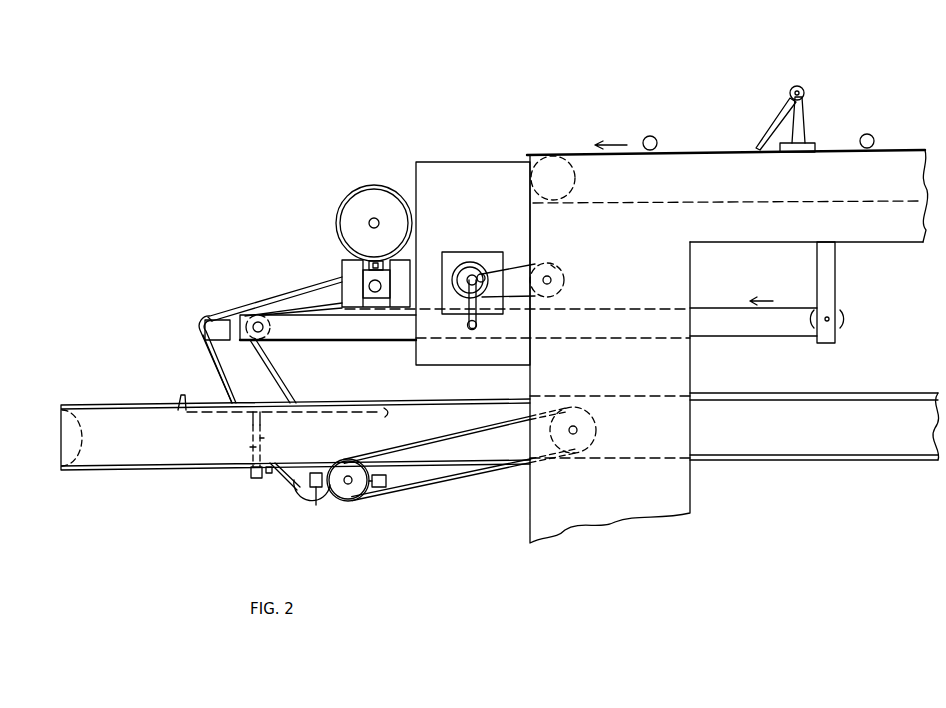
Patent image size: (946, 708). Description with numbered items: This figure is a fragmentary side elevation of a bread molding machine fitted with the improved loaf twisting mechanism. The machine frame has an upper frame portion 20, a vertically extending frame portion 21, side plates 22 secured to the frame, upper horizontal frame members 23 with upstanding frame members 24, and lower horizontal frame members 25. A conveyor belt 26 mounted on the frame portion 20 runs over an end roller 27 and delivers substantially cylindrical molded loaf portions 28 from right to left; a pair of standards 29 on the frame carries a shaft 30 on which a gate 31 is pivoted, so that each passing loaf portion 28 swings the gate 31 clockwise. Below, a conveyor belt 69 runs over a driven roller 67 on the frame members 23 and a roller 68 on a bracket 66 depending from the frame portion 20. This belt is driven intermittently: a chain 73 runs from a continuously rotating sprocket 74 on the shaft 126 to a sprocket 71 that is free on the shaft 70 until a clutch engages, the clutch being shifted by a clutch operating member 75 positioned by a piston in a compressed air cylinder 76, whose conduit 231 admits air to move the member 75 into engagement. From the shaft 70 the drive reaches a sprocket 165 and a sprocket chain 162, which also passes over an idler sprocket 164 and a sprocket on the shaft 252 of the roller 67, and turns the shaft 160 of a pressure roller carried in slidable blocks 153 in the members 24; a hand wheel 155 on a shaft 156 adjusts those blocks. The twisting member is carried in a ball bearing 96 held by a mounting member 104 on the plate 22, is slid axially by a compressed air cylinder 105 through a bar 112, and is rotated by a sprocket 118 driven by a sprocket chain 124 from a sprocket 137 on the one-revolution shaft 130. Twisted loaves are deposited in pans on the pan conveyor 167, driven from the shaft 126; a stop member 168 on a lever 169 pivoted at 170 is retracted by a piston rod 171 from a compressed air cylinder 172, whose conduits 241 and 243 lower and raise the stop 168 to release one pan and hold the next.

The upper frame portion 20 is at (887, 163).
The vertically extending frame portion 21 is at (678, 367).
The side plate 22 is at (445, 168).
The upper horizontally extending frame member 23 is at (290, 333).
The upstanding frame member 24 is at (337, 270).
The lower horizontally extending frame member 25 is at (780, 410).
The conveyor belt 26 is at (672, 152).
The roller 27 is at (545, 162).
The loaf portion 28 is at (650, 136).
The standard 29 is at (801, 116).
The shaft 30 is at (803, 89).
The gate 31 is at (772, 122).
The bracket 66 is at (827, 280).
The roller 67 is at (303, 305).
The roller 68 is at (813, 318).
The conveyor belt 69 is at (712, 308).
The shaft 70 is at (348, 485).
The sprocket 71 is at (345, 493).
The chain 73 is at (463, 483).
The sprocket 74 is at (580, 447).
The clutch operating member 75 is at (380, 487).
The compressed air cylinder 76 is at (310, 483).
The bearing member 96 is at (467, 265).
The mounting member 104 is at (450, 258).
The compressed air cylinder 105 is at (470, 330).
The bar 112 is at (475, 330).
The sprocket 118 is at (482, 275).
The sprocket chain 124 is at (517, 297).
The shaft 126 is at (578, 430).
The shaft 130 is at (567, 278).
The sprocket 137 is at (553, 265).
The slidable block 153 is at (368, 273).
The hand wheel 155 is at (361, 186).
The shaft 156 is at (372, 222).
The shaft 160 is at (374, 293).
The sprocket chain 162 is at (258, 298).
The idler sprocket 164 is at (212, 312).
The sprocket 165 is at (307, 492).
The pan conveyor 167 is at (62, 423).
The stop member 168 is at (178, 402).
The lever 169 is at (330, 410).
The pivot 170 is at (387, 410).
The piston rod 171 is at (260, 420).
The compressed air cylinder 172 is at (247, 447).
The conduit 231 is at (310, 503).
The conduit 241 is at (263, 438).
The conduit 243 is at (268, 475).
The shaft 252 is at (245, 315).